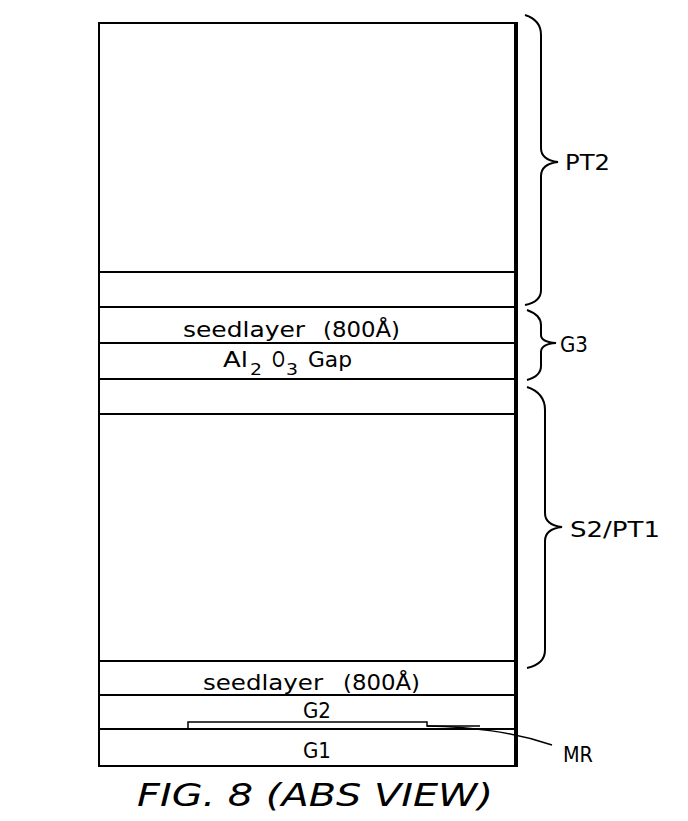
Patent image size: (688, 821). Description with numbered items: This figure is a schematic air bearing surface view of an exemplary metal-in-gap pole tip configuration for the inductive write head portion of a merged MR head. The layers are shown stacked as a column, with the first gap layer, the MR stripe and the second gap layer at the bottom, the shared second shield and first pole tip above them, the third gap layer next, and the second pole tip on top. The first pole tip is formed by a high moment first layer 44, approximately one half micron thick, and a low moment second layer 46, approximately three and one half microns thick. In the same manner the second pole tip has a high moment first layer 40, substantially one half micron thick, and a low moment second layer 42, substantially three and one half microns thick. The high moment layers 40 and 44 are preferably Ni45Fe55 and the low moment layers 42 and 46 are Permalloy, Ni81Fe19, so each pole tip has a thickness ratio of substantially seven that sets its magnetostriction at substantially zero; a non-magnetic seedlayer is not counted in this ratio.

The high moment first layer 40 is at (113, 287).
The low moment second layer 42 is at (113, 186).
The high moment first layer 44 is at (113, 394).
The low moment second layer 46 is at (113, 521).